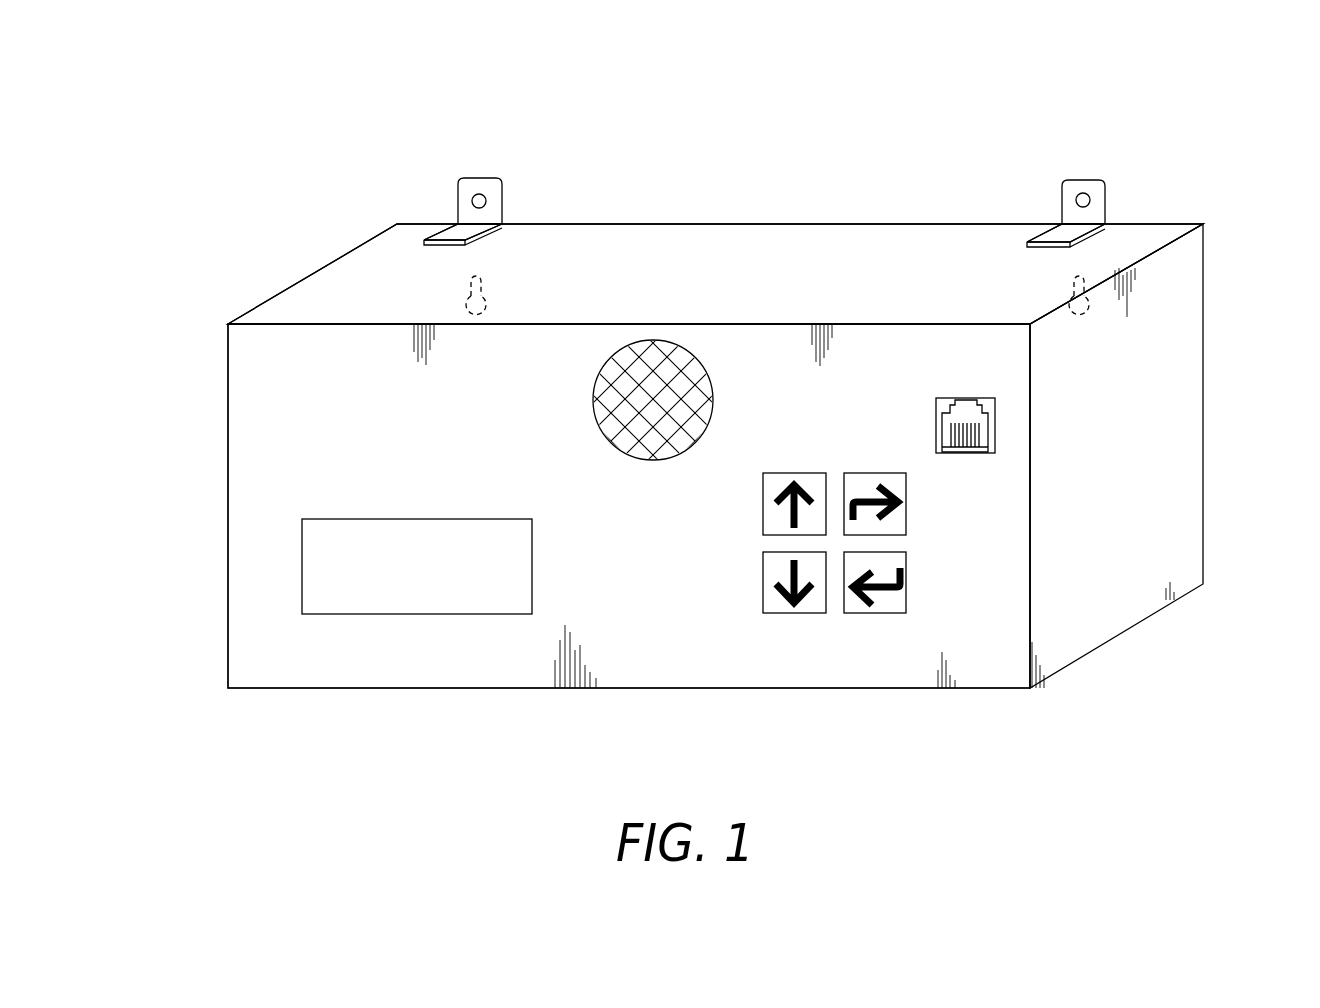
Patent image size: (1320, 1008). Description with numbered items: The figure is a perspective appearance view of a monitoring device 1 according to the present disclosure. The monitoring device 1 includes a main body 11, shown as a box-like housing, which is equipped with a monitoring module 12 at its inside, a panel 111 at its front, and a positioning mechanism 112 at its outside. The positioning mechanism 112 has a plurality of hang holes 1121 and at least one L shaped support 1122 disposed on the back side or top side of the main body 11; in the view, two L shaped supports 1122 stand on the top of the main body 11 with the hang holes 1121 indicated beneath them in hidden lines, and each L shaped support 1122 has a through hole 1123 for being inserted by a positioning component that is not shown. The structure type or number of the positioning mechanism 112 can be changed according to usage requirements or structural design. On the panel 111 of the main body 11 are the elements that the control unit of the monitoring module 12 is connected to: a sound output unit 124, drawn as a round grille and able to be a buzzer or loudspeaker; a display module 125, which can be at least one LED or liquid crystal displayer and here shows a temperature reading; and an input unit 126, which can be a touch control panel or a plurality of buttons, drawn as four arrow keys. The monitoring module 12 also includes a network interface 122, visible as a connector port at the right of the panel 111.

The monitoring device 1 is at (316, 248).
The main body 11 is at (851, 238).
The panel 111 is at (250, 394).
The positioning mechanism 112 is at (478, 118).
The hang holes 1121 is at (465, 300).
The L shaped support 1122 is at (492, 212).
The through hole 1123 is at (479, 194).
The monitoring module 12 is at (1014, 407).
The network interface 122 is at (985, 435).
The sound output unit 124 is at (657, 341).
The display module 125 is at (315, 570).
The input unit 126 is at (793, 622).